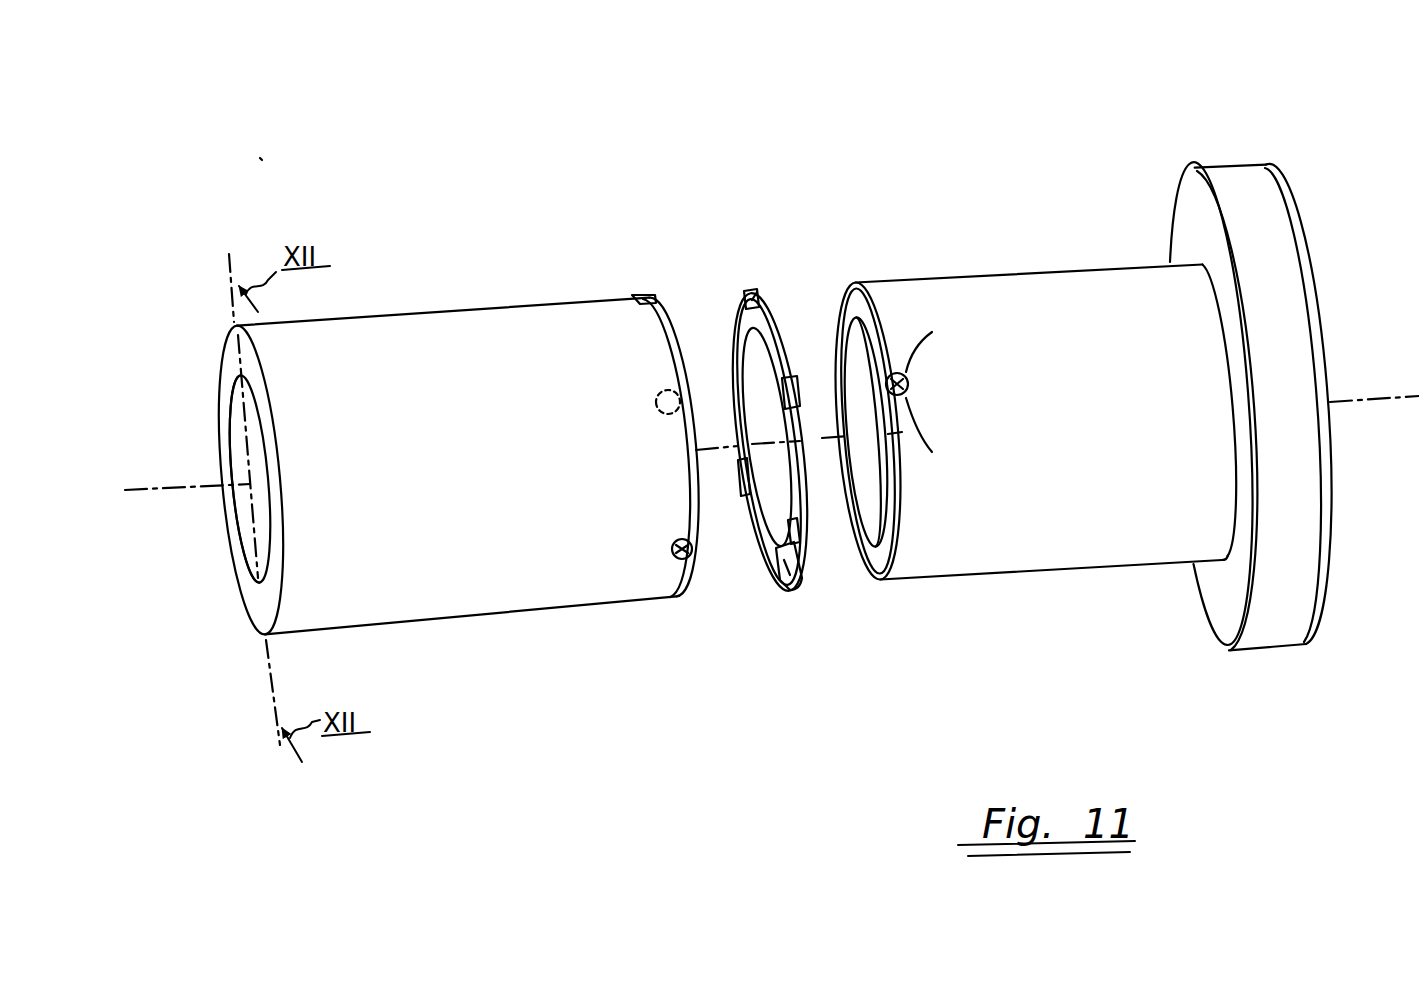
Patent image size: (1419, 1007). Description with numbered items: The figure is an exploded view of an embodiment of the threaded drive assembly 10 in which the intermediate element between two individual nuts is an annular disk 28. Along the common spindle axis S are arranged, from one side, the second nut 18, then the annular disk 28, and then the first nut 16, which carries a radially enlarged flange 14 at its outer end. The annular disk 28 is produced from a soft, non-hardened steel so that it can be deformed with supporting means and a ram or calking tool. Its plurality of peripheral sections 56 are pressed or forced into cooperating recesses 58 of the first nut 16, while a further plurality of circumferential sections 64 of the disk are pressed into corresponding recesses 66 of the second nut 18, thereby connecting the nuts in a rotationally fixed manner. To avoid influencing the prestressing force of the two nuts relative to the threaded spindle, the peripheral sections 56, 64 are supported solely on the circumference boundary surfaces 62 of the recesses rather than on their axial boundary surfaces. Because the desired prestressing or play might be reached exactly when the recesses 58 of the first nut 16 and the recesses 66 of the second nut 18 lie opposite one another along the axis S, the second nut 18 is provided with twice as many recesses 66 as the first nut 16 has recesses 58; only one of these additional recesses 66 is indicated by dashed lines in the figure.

The threaded drive (ball screw drive assembly) 10 is at (290, 190).
The flange 14 is at (1145, 135).
The first nut 16 is at (983, 272).
The second nut 18 is at (463, 326).
The annular disk 28 is at (790, 312).
The peripheral sections 56 is at (783, 392).
The recesses 58 is at (834, 328).
The circumference boundary surfaces 62 is at (680, 540).
The circumferential sections 64 is at (777, 560).
The recesses 66 is at (644, 296).
The spindle axis S is at (150, 489).